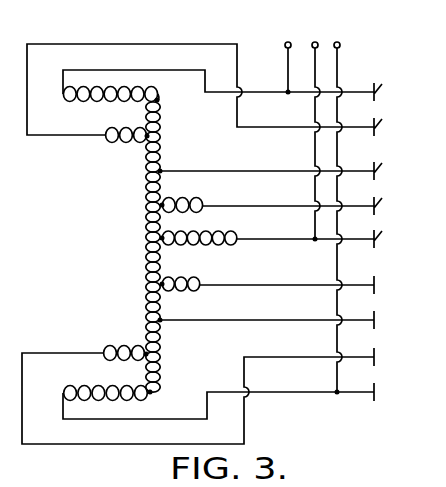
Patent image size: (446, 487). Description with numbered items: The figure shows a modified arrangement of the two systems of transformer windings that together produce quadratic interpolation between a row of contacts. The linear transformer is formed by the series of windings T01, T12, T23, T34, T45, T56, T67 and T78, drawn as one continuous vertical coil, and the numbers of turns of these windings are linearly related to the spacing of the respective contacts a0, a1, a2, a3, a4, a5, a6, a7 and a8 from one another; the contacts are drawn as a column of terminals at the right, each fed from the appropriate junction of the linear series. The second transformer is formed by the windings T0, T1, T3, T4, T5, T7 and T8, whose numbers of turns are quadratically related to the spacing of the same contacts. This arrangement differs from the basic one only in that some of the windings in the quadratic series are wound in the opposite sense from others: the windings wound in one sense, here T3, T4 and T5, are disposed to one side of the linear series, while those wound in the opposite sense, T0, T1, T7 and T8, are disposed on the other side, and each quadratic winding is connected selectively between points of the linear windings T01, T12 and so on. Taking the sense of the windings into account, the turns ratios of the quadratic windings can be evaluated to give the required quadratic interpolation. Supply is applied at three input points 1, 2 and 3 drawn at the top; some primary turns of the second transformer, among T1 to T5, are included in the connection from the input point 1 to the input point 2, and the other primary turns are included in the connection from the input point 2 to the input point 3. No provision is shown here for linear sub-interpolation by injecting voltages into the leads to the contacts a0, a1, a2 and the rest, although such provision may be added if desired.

The input point 1 is at (288, 58).
The input point 2 is at (315, 131).
The input point 3 is at (337, 208).
The contact a0 is at (230, 401).
The contact a1 is at (209, 396).
The contact a2 is at (278, 320).
The contact a3 is at (298, 281).
The contact a4 is at (317, 237).
The contact a5 is at (300, 201).
The contact a6 is at (278, 166).
The contact a7 is at (212, 90).
The contact a8 is at (230, 85).
The winding of the second transformer T0 is at (110, 389).
The winding of the second transformer T1 is at (110, 345).
The winding of the second transformer T3 is at (183, 273).
The winding of the second transformer T4 is at (192, 230).
The winding of the second transformer T5 is at (183, 195).
The winding of the second transformer T7 is at (107, 132).
The winding of the second transformer T8 is at (132, 92).
The winding of the linear transformer T01 is at (158, 375).
The winding of the linear transformer T12 is at (158, 342).
The winding of the linear transformer T23 is at (145, 290).
The winding of the linear transformer T34 is at (145, 253).
The winding of the linear transformer T45 is at (146, 208).
The winding of the linear transformer T56 is at (150, 172).
The winding of the linear transformer T67 is at (136, 152).
The winding of the linear transformer T78 is at (169, 117).